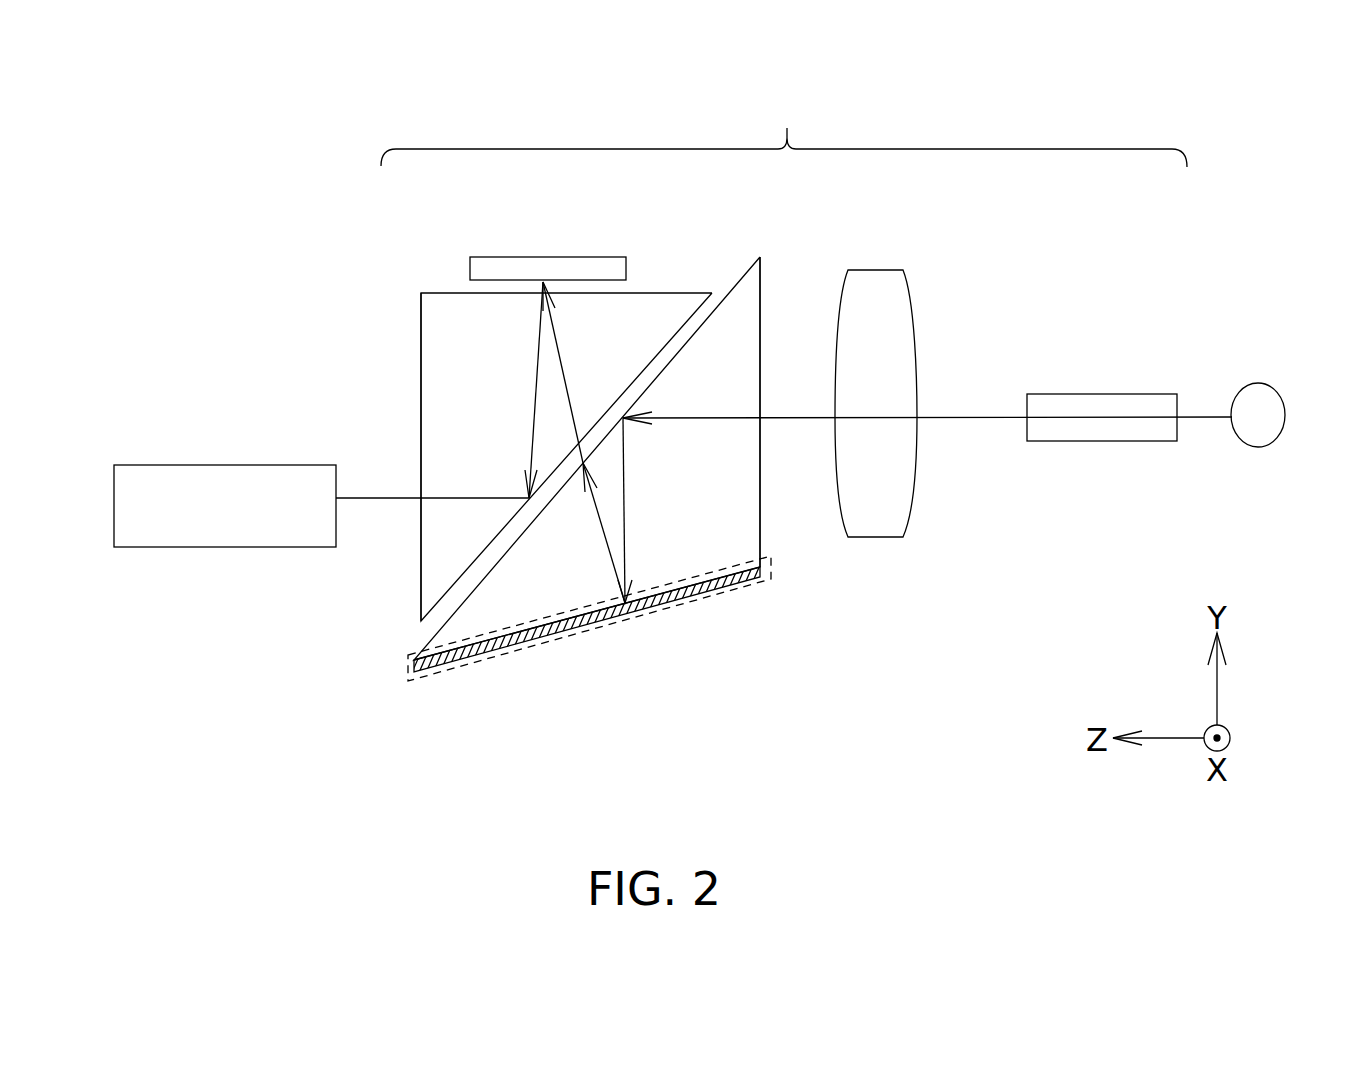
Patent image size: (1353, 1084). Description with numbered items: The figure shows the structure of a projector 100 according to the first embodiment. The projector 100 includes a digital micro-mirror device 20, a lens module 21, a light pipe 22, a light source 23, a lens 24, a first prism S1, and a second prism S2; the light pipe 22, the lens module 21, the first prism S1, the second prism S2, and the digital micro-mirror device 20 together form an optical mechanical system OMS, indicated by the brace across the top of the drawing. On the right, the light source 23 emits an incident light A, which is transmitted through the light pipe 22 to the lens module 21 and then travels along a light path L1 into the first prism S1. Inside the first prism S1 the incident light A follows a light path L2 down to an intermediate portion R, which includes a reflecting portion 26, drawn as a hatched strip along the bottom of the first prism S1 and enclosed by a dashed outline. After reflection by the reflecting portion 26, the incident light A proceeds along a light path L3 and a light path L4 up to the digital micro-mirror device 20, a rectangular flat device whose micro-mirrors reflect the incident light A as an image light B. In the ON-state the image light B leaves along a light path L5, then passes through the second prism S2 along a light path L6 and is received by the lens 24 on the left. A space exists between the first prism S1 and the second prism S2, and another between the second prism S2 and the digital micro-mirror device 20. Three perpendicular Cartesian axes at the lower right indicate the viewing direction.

The projector 100 is at (241, 194).
The digital micro-mirror device 20 is at (543, 257).
The lens module 21 is at (873, 270).
The light pipe 22 is at (1100, 394).
The light source 23 is at (1258, 383).
The lens 24 is at (224, 465).
The reflecting portion 26 is at (587, 625).
The optical mechanical system OMS is at (784, 127).
The first prism S1 is at (760, 538).
The second prism S2 is at (421, 328).
The image light B is at (537, 355).
The intermediate portion R is at (733, 592).
The incident light A is at (1210, 418).
The light path L1 is at (812, 414).
The light path L2 is at (668, 515).
The light path L3 is at (605, 571).
The light path L4 is at (604, 366).
The light path L5 is at (526, 417).
The light path L6 is at (400, 489).